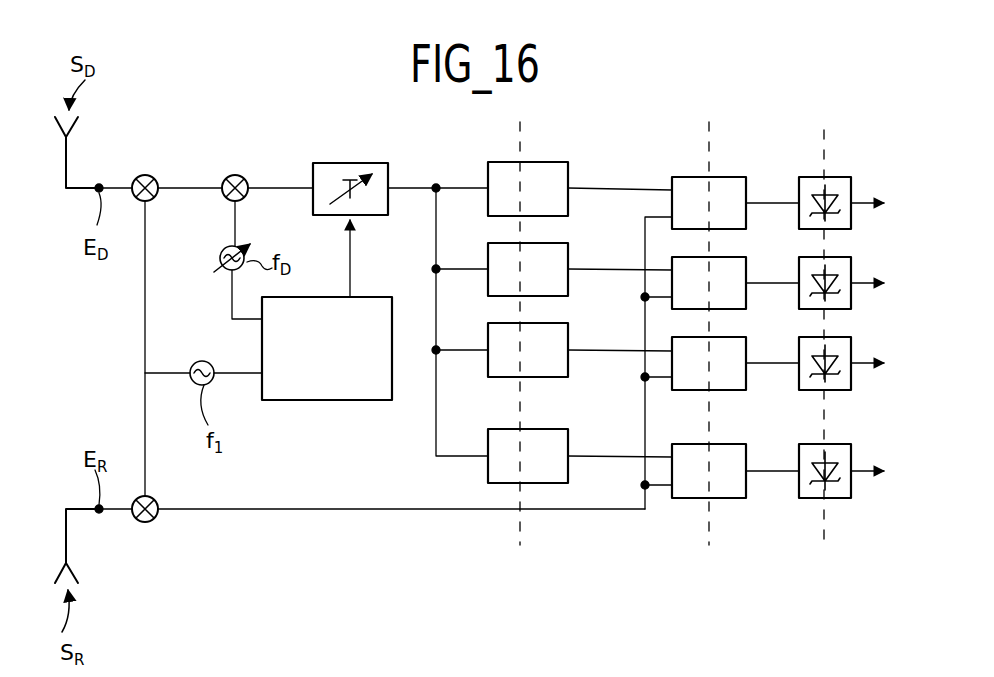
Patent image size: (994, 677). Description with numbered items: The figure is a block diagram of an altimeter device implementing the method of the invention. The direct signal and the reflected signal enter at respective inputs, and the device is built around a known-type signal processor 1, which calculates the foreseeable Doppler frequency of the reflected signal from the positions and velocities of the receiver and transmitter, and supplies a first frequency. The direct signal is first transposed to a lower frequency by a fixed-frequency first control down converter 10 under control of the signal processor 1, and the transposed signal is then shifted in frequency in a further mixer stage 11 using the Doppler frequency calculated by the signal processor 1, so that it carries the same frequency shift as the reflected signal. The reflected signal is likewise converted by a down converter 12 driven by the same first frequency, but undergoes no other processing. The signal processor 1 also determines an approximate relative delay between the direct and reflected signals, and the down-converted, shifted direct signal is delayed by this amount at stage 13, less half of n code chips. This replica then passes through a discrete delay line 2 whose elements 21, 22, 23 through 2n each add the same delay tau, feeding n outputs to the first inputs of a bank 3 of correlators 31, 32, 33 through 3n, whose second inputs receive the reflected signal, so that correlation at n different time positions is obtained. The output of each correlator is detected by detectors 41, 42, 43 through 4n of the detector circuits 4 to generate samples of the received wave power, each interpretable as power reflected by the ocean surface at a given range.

The signal processor 1 is at (305, 400).
The discrete delay line 2 is at (553, 150).
The delay line element 21 is at (575, 164).
The delay line element 22 is at (570, 244).
The delay line element 23 is at (570, 324).
The delay line element 2n is at (570, 430).
The bank of correlators 3 is at (728, 158).
The correlator 31 is at (738, 177).
The correlator 32 is at (733, 257).
The correlator 33 is at (733, 337).
The correlator 3n is at (728, 444).
The detector circuits 4 is at (841, 157).
The detector 41 is at (843, 177).
The detector 42 is at (838, 257).
The detector 43 is at (838, 337).
The detector 4n is at (833, 444).
The first control down converter 10 is at (150, 176).
The second mixer 11 is at (240, 176).
The down converter 12 is at (150, 522).
The delay 13 is at (345, 163).